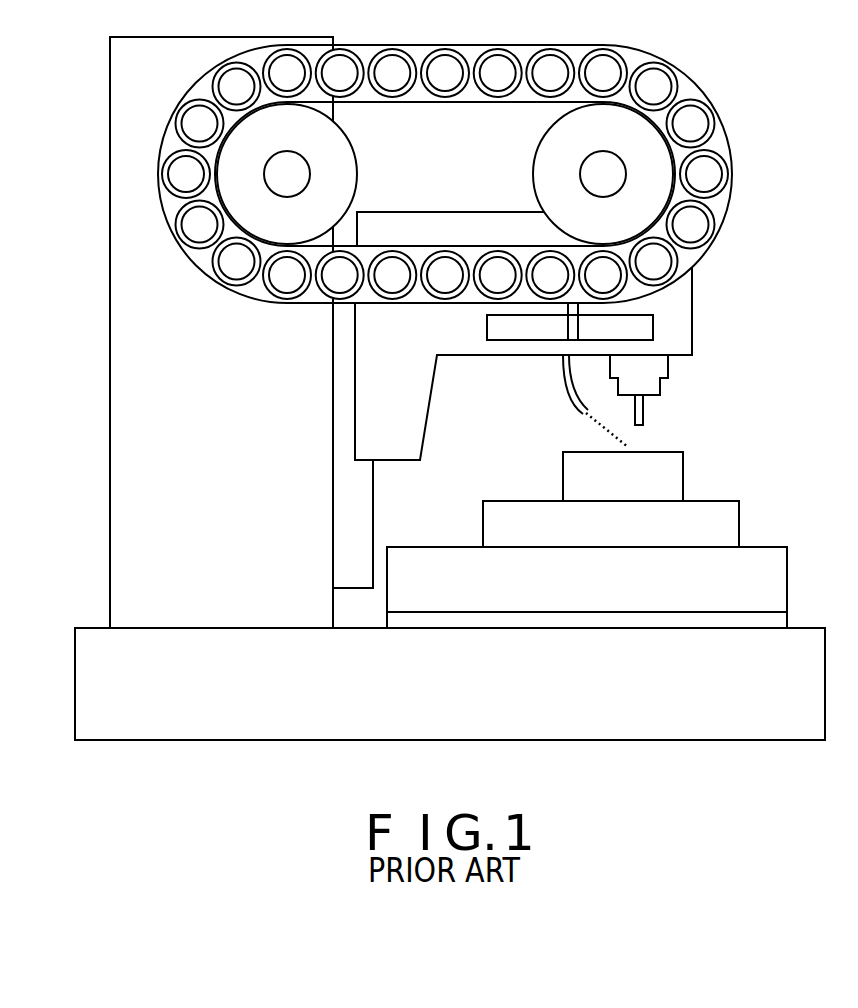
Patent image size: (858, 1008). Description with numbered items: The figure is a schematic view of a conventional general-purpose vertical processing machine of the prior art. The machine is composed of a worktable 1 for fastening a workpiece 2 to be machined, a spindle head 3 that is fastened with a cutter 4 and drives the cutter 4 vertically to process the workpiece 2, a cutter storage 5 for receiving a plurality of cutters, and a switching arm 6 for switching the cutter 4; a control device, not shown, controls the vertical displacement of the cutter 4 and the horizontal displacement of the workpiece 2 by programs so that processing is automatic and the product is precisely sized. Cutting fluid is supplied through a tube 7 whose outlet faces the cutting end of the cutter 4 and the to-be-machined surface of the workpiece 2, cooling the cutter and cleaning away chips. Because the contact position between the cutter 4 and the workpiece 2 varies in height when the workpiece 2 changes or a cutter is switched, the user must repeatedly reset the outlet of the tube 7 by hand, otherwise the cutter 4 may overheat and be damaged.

The worktable 1 is at (727, 532).
The workpiece 2 is at (675, 480).
The spindle head 3 is at (657, 372).
The cutter 4 is at (643, 418).
The cutter storage 5 is at (700, 121).
The switching arm 6 is at (645, 323).
The tube 7 is at (567, 392).